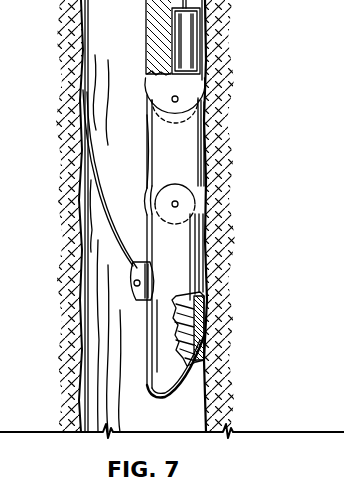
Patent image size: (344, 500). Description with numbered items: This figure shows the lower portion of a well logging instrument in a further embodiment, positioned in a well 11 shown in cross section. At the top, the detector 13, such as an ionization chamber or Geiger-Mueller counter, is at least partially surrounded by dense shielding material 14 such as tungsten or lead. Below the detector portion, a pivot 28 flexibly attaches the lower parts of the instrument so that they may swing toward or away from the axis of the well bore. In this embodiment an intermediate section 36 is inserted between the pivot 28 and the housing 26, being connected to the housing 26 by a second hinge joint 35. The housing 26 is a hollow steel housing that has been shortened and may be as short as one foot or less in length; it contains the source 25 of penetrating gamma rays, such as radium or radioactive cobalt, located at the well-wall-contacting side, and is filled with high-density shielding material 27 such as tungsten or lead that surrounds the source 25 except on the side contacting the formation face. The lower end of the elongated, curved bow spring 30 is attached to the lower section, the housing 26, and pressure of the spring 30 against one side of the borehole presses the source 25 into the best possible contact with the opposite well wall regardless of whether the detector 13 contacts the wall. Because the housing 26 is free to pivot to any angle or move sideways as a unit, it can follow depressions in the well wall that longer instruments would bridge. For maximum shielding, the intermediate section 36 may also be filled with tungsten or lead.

The well 11 is at (85, 398).
The detector 13 is at (185, 36).
The dense shielding material 14 is at (160, 40).
The source 25 is at (196, 330).
The housing 26 is at (187, 262).
The high-density shielding material 27 is at (180, 345).
The pivot 28 is at (178, 99).
The bow spring 30 is at (101, 222).
The second hinge joint 35 is at (178, 204).
The intermediate section 36 is at (190, 152).